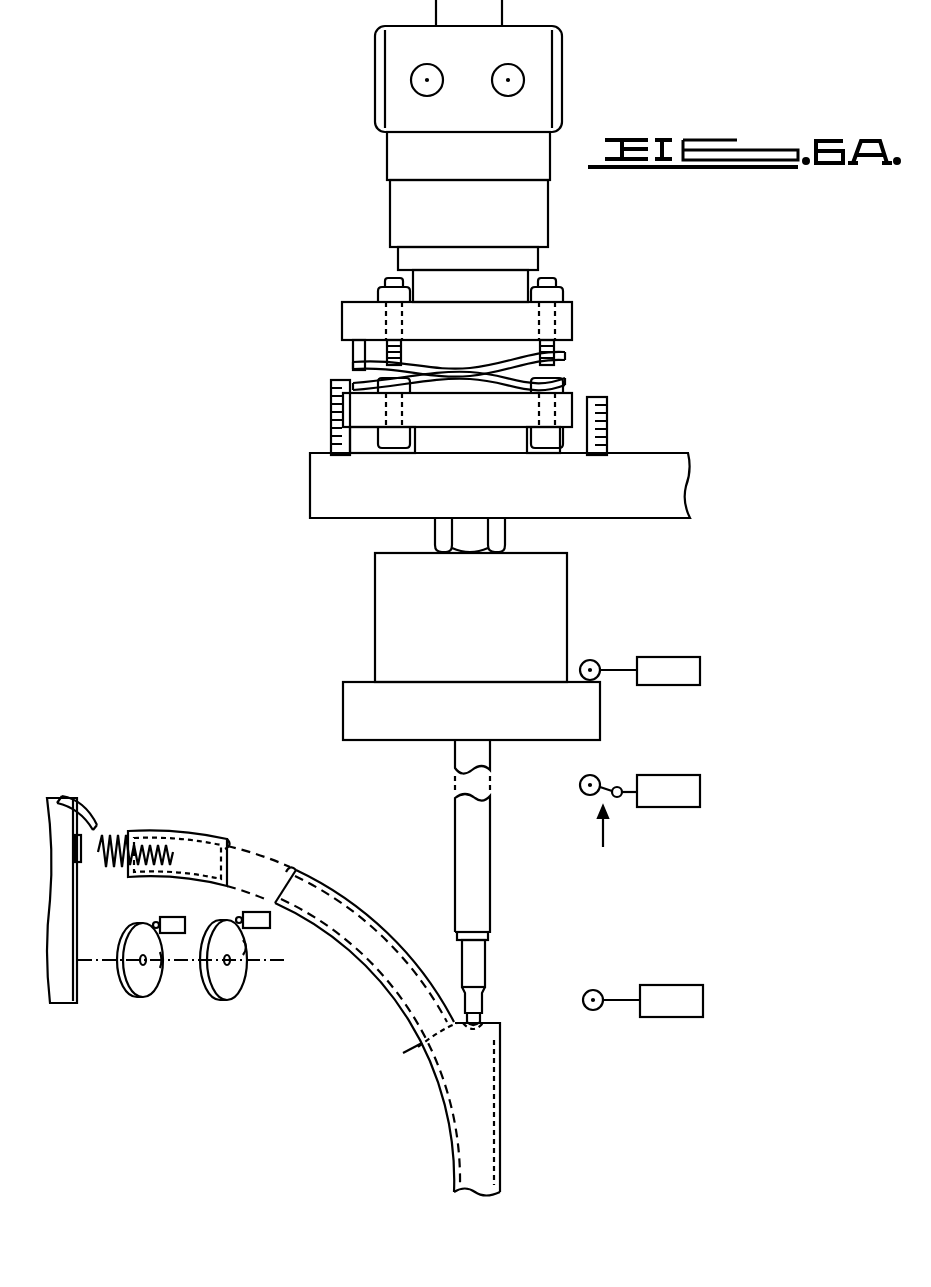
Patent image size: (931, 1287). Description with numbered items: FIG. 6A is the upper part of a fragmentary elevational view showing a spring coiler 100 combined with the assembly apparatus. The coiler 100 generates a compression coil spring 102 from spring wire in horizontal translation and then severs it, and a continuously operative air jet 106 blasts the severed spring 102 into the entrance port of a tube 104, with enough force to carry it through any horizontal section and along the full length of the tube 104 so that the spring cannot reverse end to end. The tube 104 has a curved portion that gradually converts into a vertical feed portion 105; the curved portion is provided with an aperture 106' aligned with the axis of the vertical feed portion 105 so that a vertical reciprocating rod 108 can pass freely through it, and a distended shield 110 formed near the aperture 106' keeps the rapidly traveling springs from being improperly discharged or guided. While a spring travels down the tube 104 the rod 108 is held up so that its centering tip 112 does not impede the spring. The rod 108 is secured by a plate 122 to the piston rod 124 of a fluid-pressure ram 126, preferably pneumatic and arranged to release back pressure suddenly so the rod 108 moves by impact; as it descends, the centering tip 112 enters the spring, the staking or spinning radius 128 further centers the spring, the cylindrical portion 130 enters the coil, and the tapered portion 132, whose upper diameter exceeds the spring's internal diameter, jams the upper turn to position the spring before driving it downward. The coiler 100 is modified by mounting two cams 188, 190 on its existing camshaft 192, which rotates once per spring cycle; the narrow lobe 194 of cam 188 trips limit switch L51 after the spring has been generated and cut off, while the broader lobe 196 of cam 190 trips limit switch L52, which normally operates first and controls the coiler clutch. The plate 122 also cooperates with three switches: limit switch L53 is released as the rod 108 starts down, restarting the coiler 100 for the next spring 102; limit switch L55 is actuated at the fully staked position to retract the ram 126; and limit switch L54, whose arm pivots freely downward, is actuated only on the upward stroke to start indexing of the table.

The spring coiler 100 is at (68, 1005).
The spring 102 is at (107, 832).
The tube 104 is at (343, 890).
The vertical feed portion 105 is at (487, 1120).
The air jet 106 is at (391, 1061).
The aperture 106' is at (101, 792).
The vertical reciprocating rod 108 is at (480, 833).
The distended shield 110 is at (492, 1043).
The centering tip 112 is at (477, 1012).
The plate 122 is at (582, 713).
The piston rod 124 is at (545, 587).
The ram 126 is at (520, 383).
The staking or spinning radius 128 is at (483, 992).
The cylindrical portion 130 is at (480, 950).
The tapered portion 132 is at (488, 935).
The cam 188 is at (140, 990).
The cam 190 is at (230, 983).
The camshaft 192 is at (275, 962).
The narrow lobe 194 is at (153, 952).
The broader lobe 196 is at (243, 947).
The limit switch LS1 L51 is at (168, 922).
The limit switch LS2 L52 is at (257, 917).
The limit switch LS3 L53 is at (640, 671).
The limit switch LS4 L54 is at (640, 811).
The limit switch LS5 L55 is at (643, 1001).